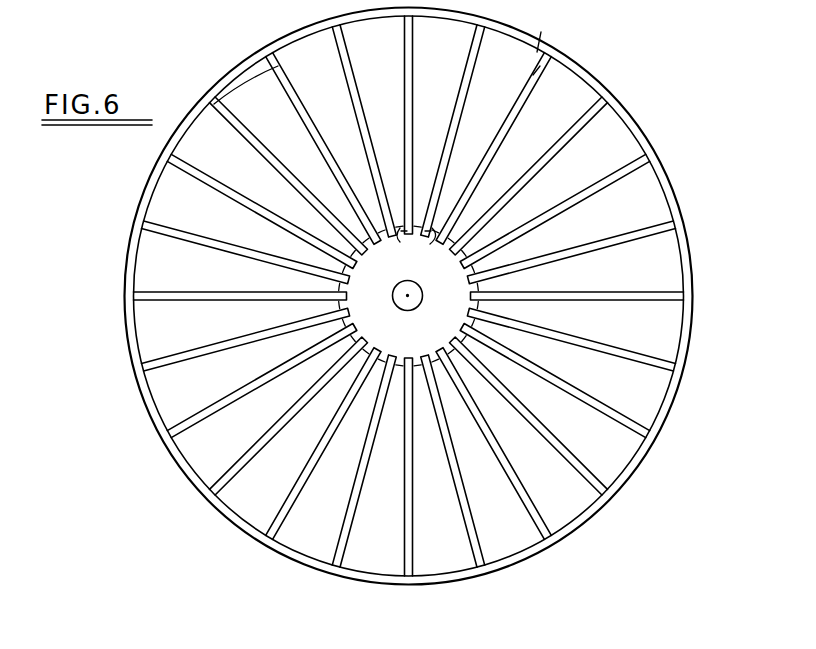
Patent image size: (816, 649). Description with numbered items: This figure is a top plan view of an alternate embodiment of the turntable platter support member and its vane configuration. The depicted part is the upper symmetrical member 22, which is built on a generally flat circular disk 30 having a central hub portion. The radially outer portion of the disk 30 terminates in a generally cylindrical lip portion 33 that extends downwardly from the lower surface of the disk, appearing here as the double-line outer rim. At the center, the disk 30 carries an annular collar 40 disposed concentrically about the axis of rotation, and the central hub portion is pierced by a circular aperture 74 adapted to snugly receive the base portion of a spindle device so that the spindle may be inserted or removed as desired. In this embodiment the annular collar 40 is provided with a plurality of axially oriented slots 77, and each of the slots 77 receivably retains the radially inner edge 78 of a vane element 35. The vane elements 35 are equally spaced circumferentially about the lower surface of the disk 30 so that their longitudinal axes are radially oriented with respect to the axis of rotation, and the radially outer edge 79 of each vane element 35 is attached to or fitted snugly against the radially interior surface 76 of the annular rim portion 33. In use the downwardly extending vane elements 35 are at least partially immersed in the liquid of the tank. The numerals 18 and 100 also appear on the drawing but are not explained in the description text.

The upper symmetrical member 22 is at (368, 292).
The circular disk 30 is at (655, 203).
The cylindrical lip portion 33 is at (646, 130).
The spokes 18 is at (476, 297).
The radially inner edge 78 is at (350, 269).
The axially oriented slots 77 is at (346, 296).
The annular collar 40 is at (396, 335).
The circular aperture 74 is at (418, 307).
The vane elements 35 is at (222, 88).
The radially outer edge 79 is at (477, 42).
The spoke attachment 100 is at (603, 26).
The radially interior surface 76 is at (573, 76).